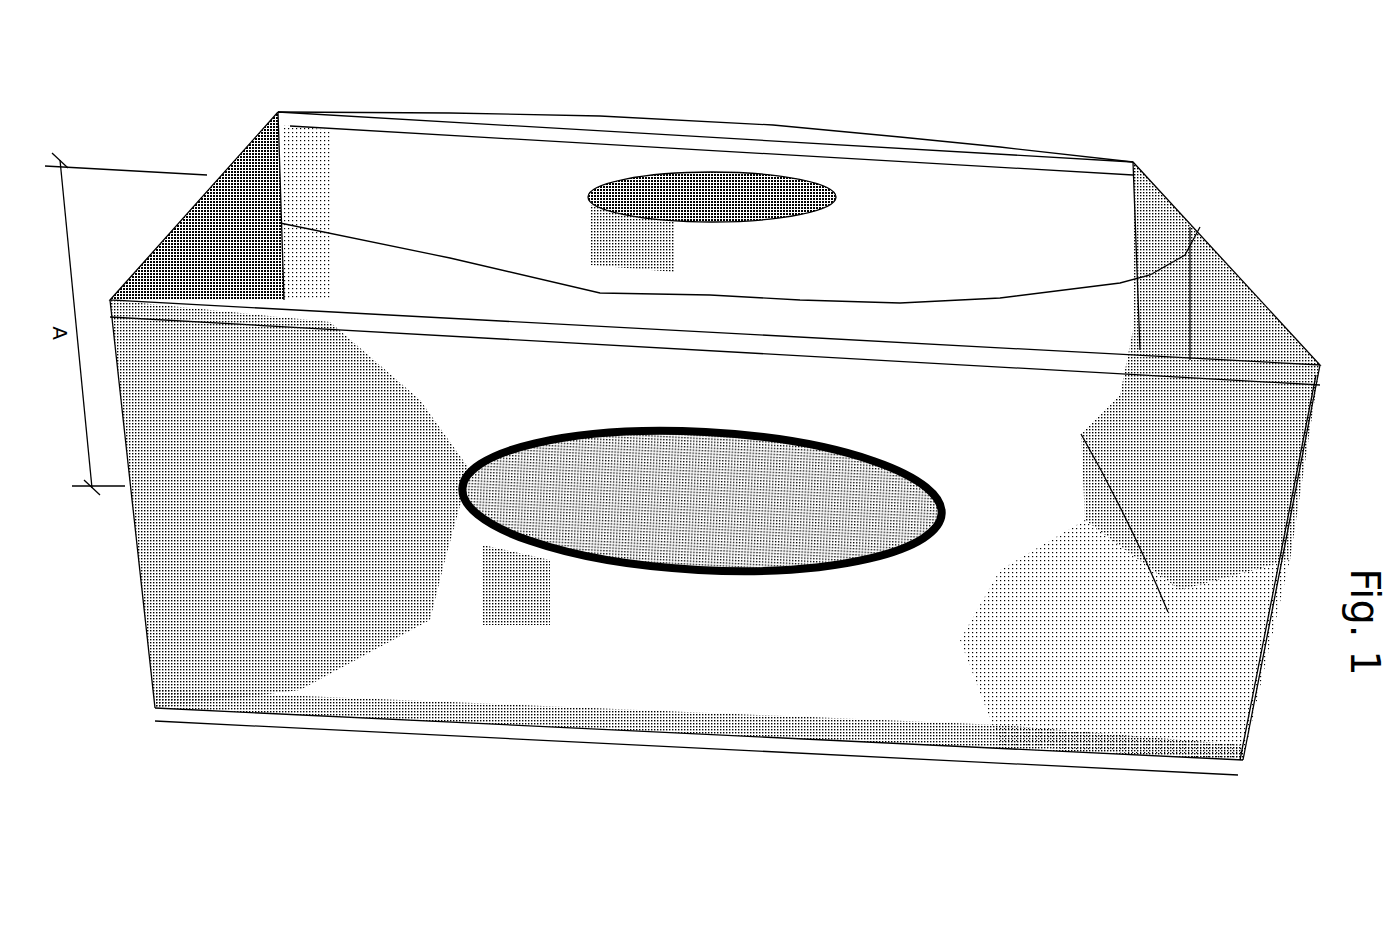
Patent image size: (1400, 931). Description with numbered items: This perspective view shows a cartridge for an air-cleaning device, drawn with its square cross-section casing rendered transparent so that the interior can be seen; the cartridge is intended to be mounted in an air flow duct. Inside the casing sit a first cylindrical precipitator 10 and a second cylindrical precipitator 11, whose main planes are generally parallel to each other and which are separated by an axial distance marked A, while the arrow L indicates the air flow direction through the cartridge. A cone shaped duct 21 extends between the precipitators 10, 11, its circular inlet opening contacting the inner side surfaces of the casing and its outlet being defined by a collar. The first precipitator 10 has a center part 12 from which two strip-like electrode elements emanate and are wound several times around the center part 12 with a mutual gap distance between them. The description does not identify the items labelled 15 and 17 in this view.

The first cylindrical precipitator 10 is at (782, 125).
The second cylindrical precipitator 11 is at (759, 683).
The center part 12 is at (607, 173).
The inlet opening 15 is at (708, 100).
The side wall 17 is at (1275, 715).
The cone shaped duct 21 is at (1085, 437).